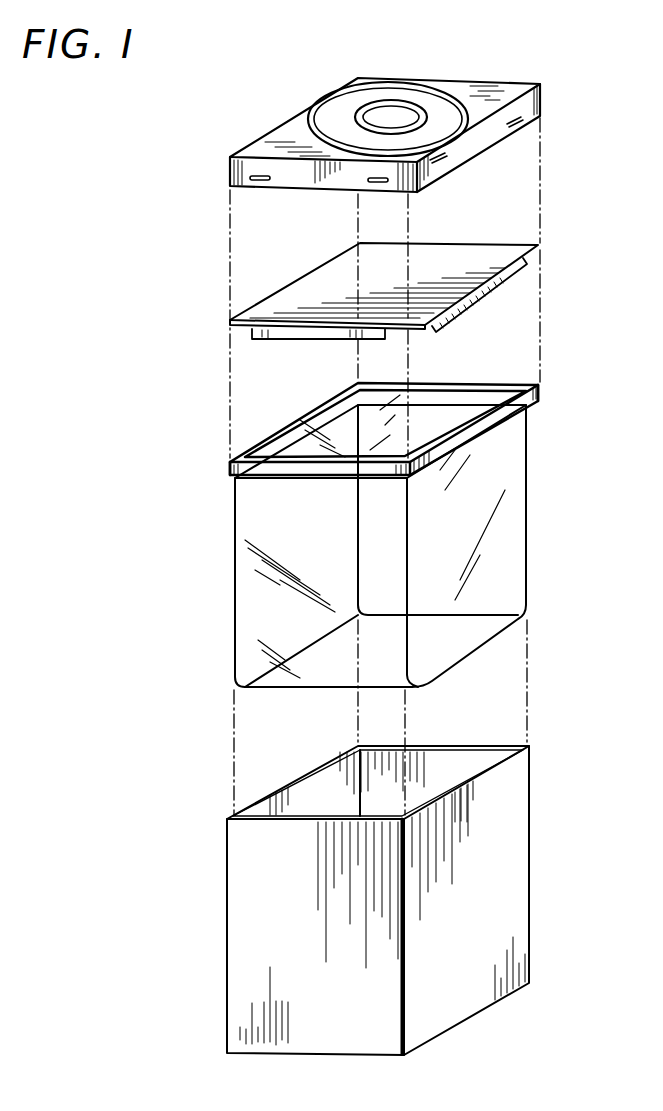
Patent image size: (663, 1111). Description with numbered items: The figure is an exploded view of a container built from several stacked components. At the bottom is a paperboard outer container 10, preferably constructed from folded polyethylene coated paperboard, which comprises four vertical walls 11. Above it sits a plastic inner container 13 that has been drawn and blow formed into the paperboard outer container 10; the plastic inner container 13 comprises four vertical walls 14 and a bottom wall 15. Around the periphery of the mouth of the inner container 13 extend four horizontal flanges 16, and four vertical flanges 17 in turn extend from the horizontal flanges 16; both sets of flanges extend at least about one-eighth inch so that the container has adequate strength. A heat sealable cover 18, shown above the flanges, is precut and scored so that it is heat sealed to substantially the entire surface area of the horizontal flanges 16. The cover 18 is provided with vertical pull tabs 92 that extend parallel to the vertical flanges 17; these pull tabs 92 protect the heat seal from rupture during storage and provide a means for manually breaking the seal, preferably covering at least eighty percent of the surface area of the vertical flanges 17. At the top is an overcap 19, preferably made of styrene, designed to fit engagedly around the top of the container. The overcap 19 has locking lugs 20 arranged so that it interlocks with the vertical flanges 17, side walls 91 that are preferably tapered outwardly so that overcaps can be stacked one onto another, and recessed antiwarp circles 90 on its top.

The paperboard outer container 10 is at (401, 900).
The vertical walls 11 is at (318, 807).
The plastic inner container 13 is at (403, 563).
The vertical walls 14 is at (345, 439).
The bottom wall 15 is at (310, 690).
The horizontal flanges 16 is at (480, 385).
The vertical flanges 17 is at (236, 480).
The heat sealable cover 18 is at (411, 306).
The overcap 19 is at (411, 147).
The locking lugs 20 is at (258, 181).
The recessed antiwarp circles 90 is at (452, 96).
The side walls 91 is at (313, 178).
The vertical pull tabs 92 is at (300, 338).